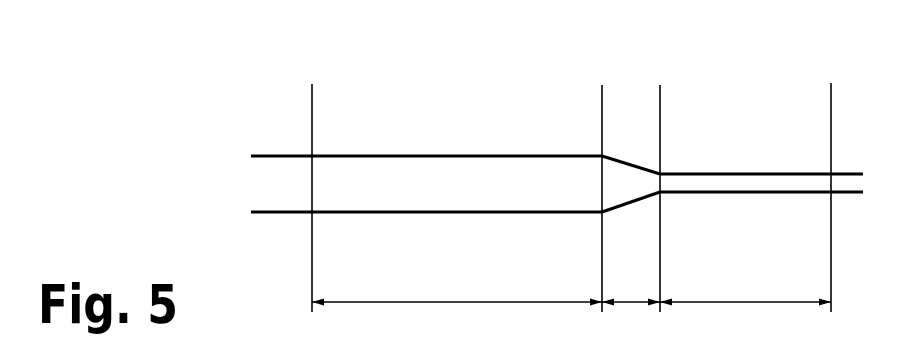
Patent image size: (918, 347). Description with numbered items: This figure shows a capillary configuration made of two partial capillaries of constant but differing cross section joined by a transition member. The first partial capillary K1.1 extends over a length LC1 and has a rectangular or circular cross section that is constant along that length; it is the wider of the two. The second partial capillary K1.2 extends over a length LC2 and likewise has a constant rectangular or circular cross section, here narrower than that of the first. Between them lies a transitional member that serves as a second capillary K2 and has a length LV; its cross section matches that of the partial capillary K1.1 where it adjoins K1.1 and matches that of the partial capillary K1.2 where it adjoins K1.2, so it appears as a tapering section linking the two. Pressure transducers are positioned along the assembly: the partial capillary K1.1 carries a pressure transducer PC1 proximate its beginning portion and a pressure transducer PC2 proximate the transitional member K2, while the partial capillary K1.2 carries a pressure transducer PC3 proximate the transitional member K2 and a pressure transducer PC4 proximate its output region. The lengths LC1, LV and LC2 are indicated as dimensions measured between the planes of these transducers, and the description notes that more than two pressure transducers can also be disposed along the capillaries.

The pressure transducer PC1 is at (312, 177).
The pressure transducer PC2 is at (598, 175).
The pressure transducer PC3 is at (661, 176).
The pressure transducer PC4 is at (831, 176).
The partial capillary K1.1 is at (445, 156).
The second capillary K2 is at (632, 165).
The partial capillary K1.2 is at (738, 174).
The length LC1 is at (457, 286).
The length LV is at (631, 285).
The length LC2 is at (745, 285).